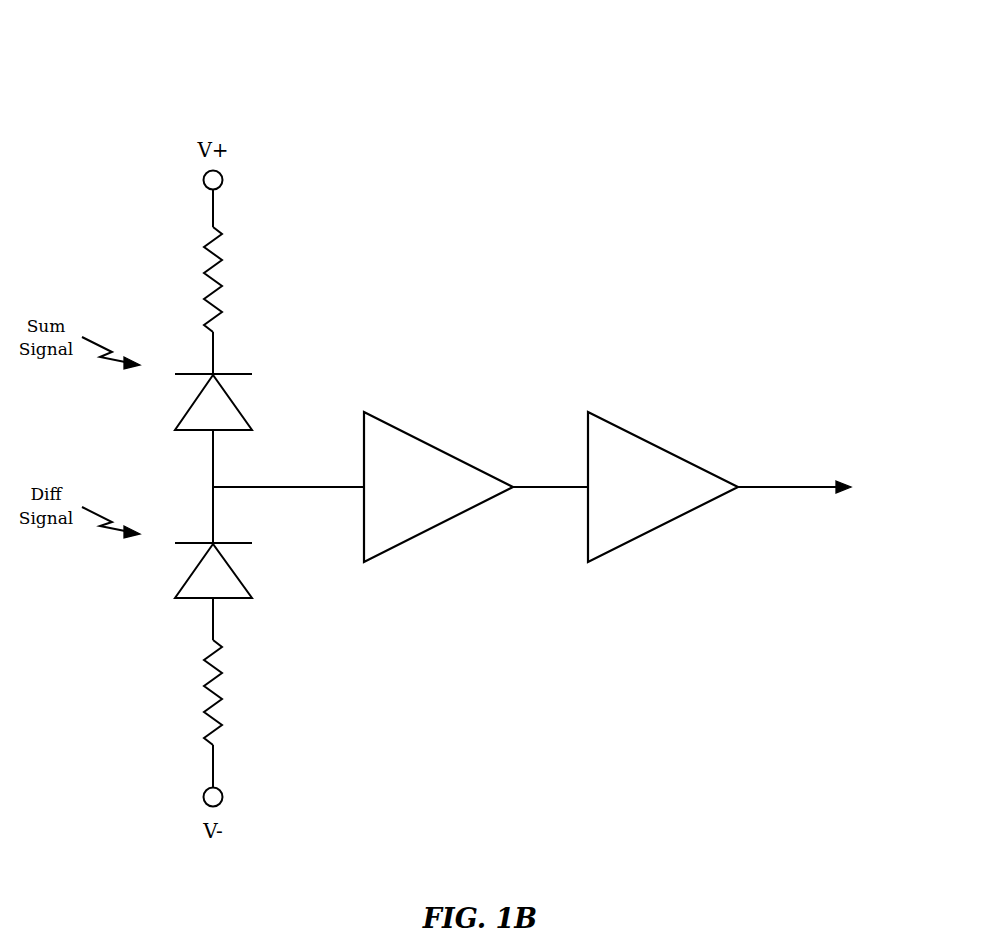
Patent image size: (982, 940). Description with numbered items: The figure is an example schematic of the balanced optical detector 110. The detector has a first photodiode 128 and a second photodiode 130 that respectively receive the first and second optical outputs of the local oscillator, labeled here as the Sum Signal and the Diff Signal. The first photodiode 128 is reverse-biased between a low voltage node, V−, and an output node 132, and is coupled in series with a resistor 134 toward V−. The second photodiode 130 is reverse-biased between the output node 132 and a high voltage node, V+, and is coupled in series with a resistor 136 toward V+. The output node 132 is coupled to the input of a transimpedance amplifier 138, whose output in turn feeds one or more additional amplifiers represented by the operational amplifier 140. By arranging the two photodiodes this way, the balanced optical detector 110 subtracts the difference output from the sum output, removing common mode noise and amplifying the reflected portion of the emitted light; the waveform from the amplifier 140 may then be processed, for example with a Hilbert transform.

The balanced optical detector 110 is at (126, 58).
The first photodiode 128 is at (197, 567).
The second photodiode 130 is at (197, 397).
The output node 132 is at (214, 464).
The resistor 134 is at (216, 670).
The resistor 136 is at (216, 258).
The transimpedance amplifier (TIA) 138 is at (440, 448).
The operational amplifier (OPAMP) 140 is at (669, 449).